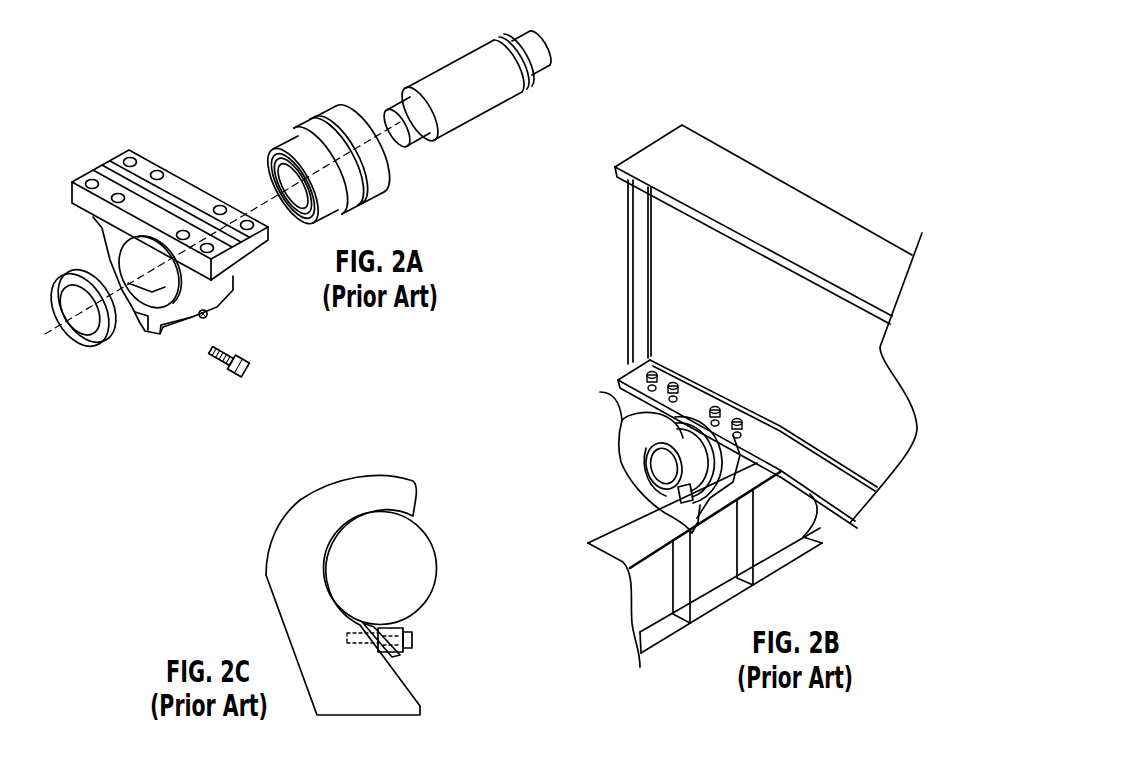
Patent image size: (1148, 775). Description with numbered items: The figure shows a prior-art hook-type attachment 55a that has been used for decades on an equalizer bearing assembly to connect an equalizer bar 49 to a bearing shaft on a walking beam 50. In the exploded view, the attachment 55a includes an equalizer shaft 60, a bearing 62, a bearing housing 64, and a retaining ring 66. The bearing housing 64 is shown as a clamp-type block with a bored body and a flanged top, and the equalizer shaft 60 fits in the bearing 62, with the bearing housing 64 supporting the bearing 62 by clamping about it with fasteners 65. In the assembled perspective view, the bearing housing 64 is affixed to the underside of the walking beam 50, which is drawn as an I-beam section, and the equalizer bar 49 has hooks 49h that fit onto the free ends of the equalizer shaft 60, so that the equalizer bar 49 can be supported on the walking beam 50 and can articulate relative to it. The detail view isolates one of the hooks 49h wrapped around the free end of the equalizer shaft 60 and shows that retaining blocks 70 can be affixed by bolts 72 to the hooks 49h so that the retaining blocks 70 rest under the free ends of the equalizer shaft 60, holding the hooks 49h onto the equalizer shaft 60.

In FIG. 2A, the hook-type attachment 55a is at (233, 86).
In FIG. 2B, the hook-type attachment 55a is at (583, 300).
In FIG. 2A, the bearing housing 64 is at (207, 200).
In FIG. 2B, the bearing housing 64 is at (628, 395).
In FIG. 2A, the retaining ring 66 is at (110, 333).
In FIG. 2A, the fasteners 65 is at (237, 350).
In FIG. 2A, the bearing 62 is at (336, 118).
In FIG. 2A, the equalizer shaft 60 is at (426, 83).
In FIG. 2B, the equalizer shaft 60 is at (645, 464).
In FIG. 2C, the equalizer shaft 60 is at (437, 557).
In FIG. 2B, the walking beam 50 is at (790, 184).
In FIG. 2B, the hooks 49h is at (620, 441).
In FIG. 2C, the hooks 49h is at (277, 526).
In FIG. 2B, the retaining blocks 70 is at (635, 505).
In FIG. 2C, the retaining blocks 70 is at (397, 651).
In FIG. 2B, the equalizer bar 49 is at (806, 557).
In FIG. 2C, the bolts 72 is at (412, 637).